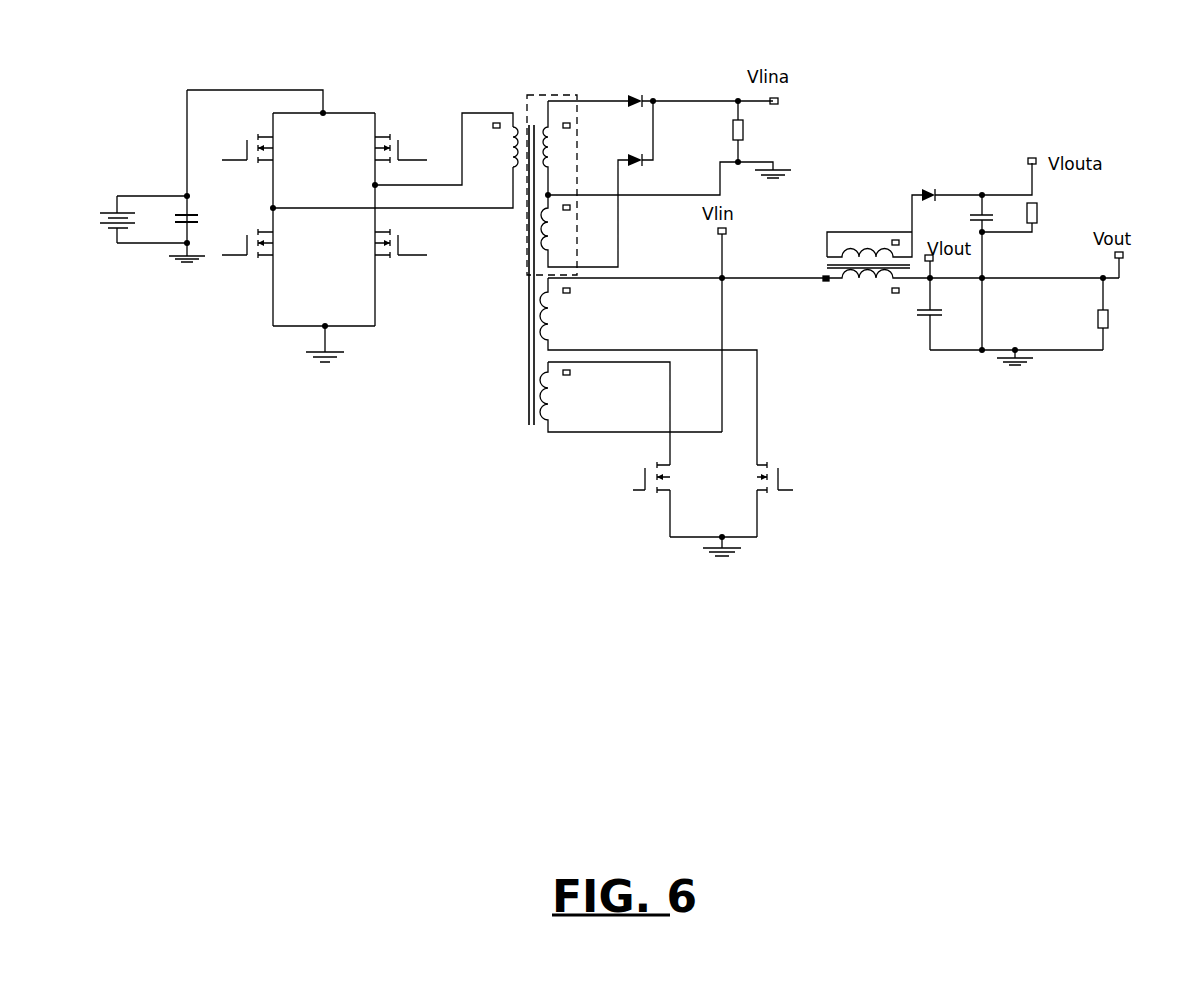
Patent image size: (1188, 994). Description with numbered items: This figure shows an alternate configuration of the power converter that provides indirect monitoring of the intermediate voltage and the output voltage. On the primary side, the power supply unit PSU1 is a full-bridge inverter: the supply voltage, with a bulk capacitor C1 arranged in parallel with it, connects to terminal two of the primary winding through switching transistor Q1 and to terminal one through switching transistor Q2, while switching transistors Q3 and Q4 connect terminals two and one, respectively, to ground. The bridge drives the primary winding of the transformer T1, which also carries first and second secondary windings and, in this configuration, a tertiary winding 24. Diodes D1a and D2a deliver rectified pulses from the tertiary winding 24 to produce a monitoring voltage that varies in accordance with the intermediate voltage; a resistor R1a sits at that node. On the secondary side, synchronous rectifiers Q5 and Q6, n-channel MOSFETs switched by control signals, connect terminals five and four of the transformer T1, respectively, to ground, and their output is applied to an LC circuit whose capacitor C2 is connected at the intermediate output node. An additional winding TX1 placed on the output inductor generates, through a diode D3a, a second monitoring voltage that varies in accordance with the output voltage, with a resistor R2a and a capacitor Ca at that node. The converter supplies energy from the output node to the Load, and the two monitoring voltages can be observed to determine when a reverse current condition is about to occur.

The tertiary winding 24 is at (575, 95).
The power supply unit PSU1 is at (284, 204).
The bulk capacitor C1 is at (200, 222).
The switching transistor Q1 is at (247, 160).
The switching transistor Q2 is at (401, 160).
The switching transistor Q3 is at (247, 254).
The switching transistor Q4 is at (401, 254).
The transformer T1 is at (660, 268).
The diode D1a is at (660, 87).
The diode D2a is at (628, 133).
The resistor R1a is at (762, 139).
The synchronous rectifier Q5 is at (647, 499).
The synchronous rectifier Q6 is at (778, 499).
The additional winding TX1 is at (946, 244).
The diode D3a is at (972, 181).
The resistor R2a is at (1032, 213).
The capacitor Ca is at (967, 272).
The capacitor C2 is at (909, 305).
The load Load is at (1128, 314).